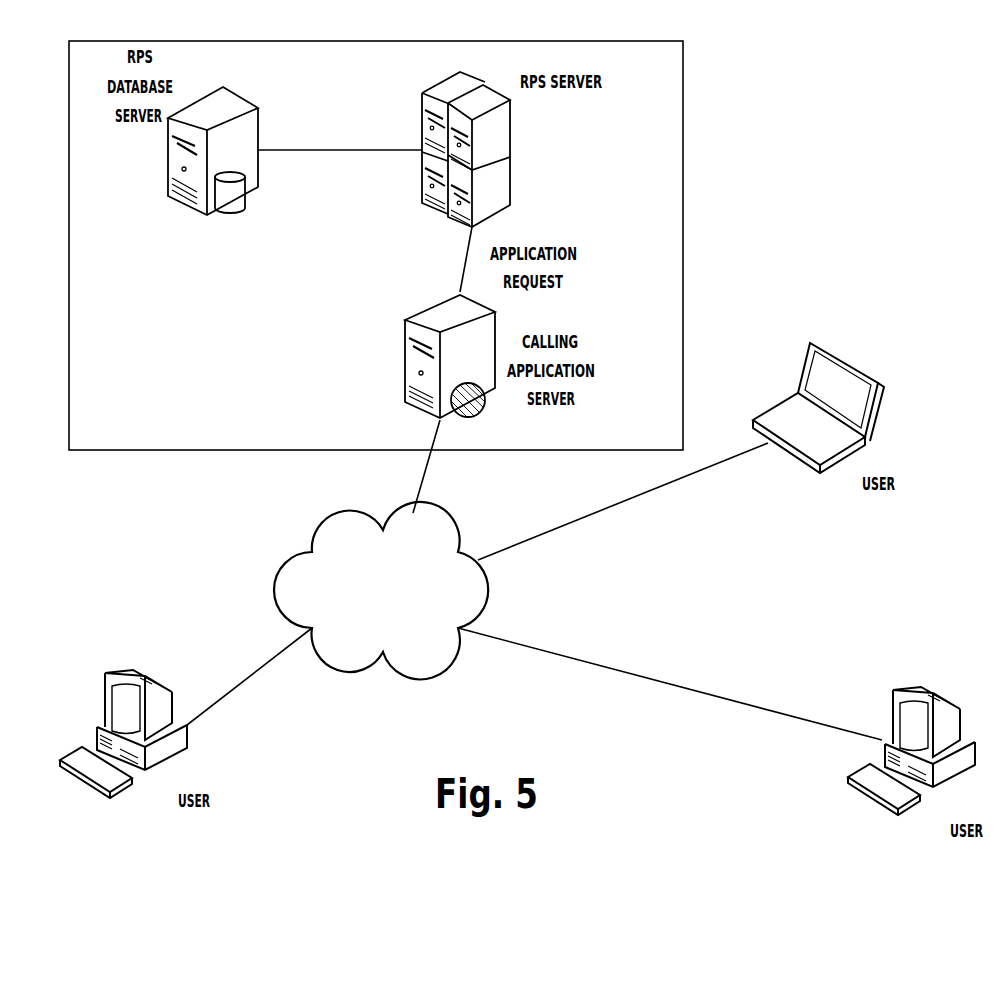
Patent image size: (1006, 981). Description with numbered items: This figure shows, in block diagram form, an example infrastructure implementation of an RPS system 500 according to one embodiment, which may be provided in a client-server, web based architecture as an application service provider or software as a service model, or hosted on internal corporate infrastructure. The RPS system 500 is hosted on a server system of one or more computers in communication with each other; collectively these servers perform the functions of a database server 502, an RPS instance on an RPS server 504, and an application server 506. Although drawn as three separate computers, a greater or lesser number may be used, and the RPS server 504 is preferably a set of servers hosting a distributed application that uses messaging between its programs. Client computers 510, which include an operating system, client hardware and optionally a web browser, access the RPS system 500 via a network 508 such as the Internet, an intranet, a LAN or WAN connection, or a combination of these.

The RPS system 500 is at (830, 206).
The database server 502 is at (168, 150).
The RPS server 504 is at (510, 152).
The application server 506 is at (405, 350).
The network 508 is at (350, 512).
The client computers 510 is at (882, 378).